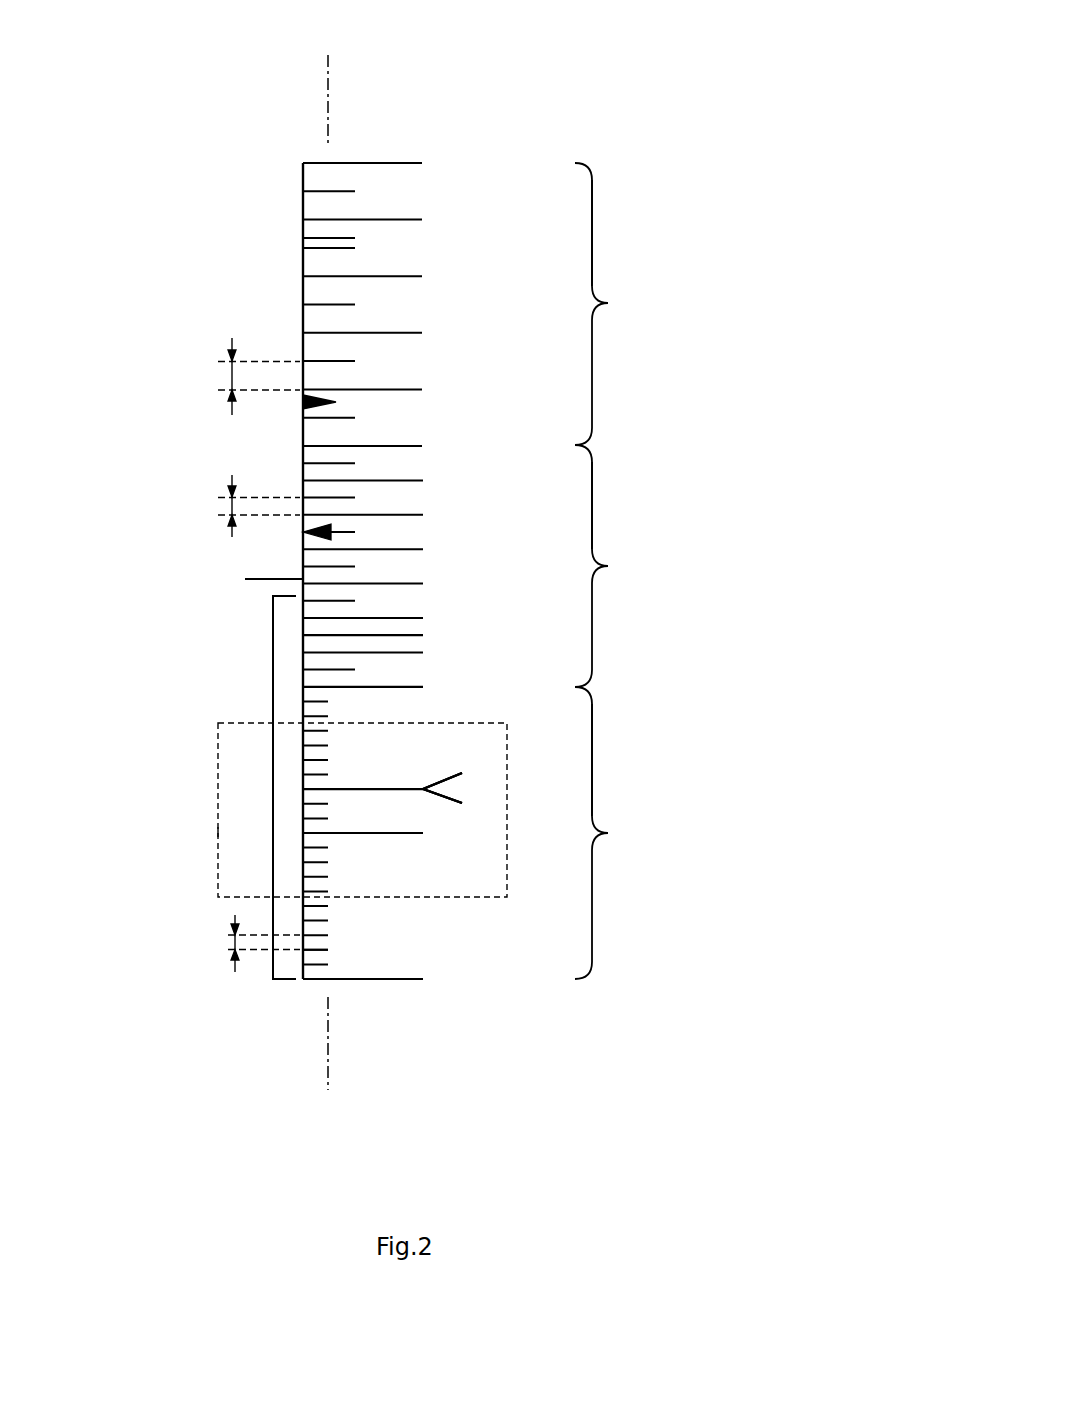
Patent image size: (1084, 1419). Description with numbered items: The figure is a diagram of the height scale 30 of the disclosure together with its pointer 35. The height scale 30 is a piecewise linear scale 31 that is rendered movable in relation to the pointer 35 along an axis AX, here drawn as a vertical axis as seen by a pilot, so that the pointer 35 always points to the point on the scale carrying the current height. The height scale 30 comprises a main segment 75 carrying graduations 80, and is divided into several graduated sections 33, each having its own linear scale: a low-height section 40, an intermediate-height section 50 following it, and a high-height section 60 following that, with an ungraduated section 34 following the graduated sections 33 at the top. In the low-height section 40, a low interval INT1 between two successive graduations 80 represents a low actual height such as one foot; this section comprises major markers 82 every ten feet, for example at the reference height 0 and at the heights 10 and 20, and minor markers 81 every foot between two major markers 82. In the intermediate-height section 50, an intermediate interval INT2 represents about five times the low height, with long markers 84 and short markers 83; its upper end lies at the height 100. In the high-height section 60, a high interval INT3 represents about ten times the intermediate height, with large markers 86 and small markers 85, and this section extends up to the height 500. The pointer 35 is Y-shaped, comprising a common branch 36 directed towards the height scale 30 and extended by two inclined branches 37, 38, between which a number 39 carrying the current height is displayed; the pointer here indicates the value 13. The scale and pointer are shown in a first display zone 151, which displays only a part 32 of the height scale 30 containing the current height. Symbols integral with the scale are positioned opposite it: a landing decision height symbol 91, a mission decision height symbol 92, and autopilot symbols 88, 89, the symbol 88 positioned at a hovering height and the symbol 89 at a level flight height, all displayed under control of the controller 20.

The ungraduated section 34 is at (382, 36).
The axis AX is at (328, 84).
The main segment 75 is at (303, 238).
The graduations 80 is at (373, 572).
The small markers 85 is at (368, 362).
The long markers 84 is at (428, 422).
The large markers 86 is at (393, 446).
The short markers 83 is at (357, 636).
The major markers 82 is at (360, 834).
The minor markers 81 is at (323, 949).
The autopilot symbol 88 is at (303, 405).
The autopilot symbol 89 is at (303, 532).
The landing decision height symbol 91 is at (273, 682).
The mission decision height symbol 92 is at (262, 580).
The part of the height scale 32 is at (236, 764).
The first display zone 151 is at (218, 832).
The pointer 13 is at (494, 780).
The common branch 36 is at (388, 789).
The inclined branch 37 is at (460, 774).
The inclined branch 38 is at (460, 803).
The pointer 35 is at (500, 764).
The number 39 is at (510, 782).
The graduated section 33 is at (629, 571).
The high-height section 60 is at (638, 249).
The intermediate-height section 50 is at (638, 521).
The low-height section 40 is at (638, 776).
The height scale 30 is at (603, 571).
The piecewise linear scale 31 is at (722, 641).
The low interval INT1 is at (228, 942).
The intermediate interval INT2 is at (228, 505).
The high interval INT3 is at (228, 377).
The scale value 500 is at (389, 164).
The scale value 100 is at (390, 447).
The controller 20 is at (441, 675).
The scale value 10 is at (382, 833).
The scale value 0 is at (374, 980).